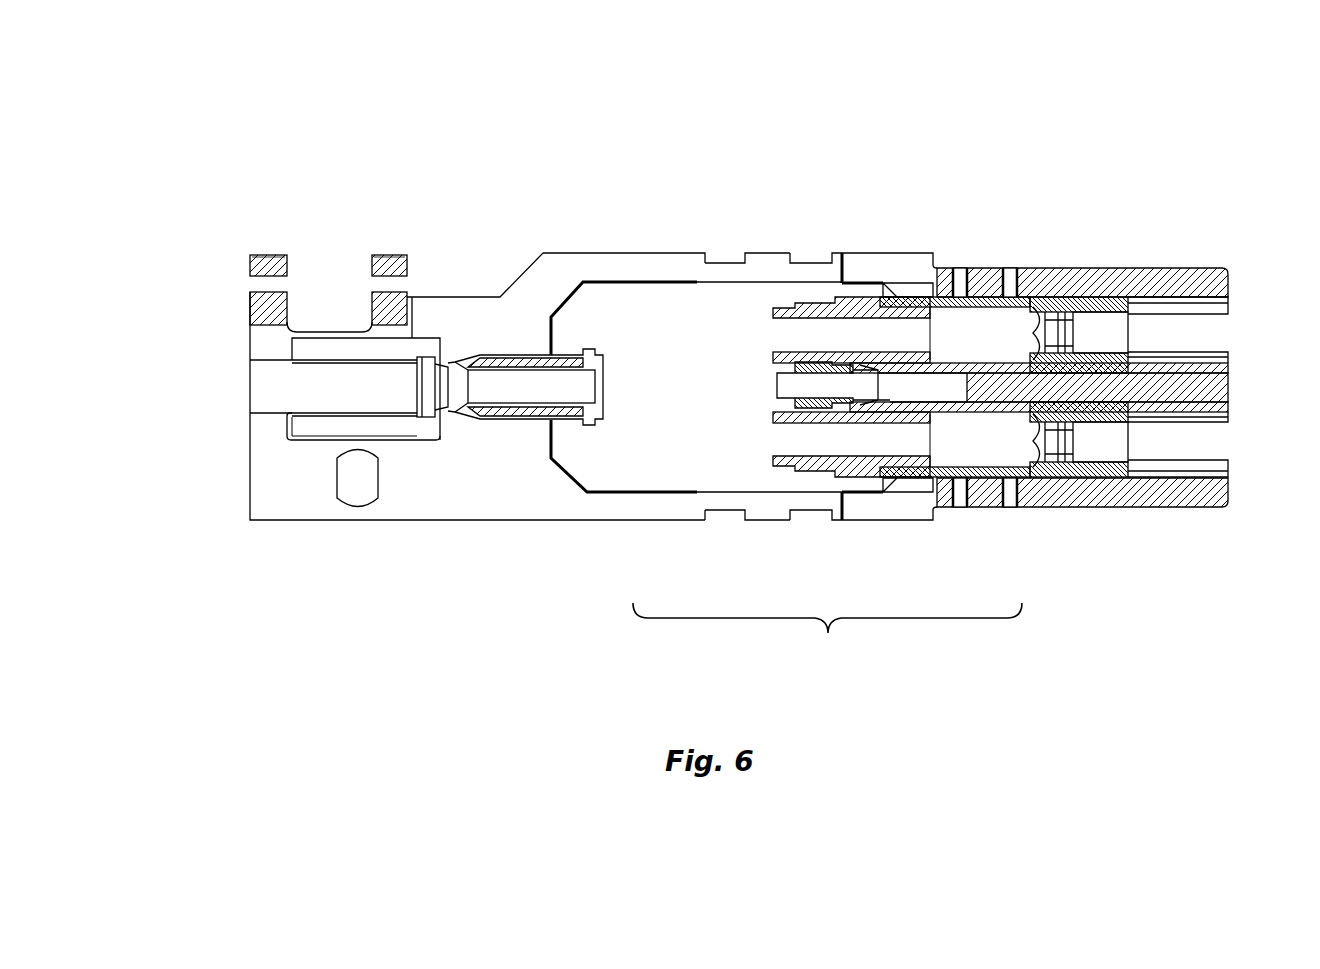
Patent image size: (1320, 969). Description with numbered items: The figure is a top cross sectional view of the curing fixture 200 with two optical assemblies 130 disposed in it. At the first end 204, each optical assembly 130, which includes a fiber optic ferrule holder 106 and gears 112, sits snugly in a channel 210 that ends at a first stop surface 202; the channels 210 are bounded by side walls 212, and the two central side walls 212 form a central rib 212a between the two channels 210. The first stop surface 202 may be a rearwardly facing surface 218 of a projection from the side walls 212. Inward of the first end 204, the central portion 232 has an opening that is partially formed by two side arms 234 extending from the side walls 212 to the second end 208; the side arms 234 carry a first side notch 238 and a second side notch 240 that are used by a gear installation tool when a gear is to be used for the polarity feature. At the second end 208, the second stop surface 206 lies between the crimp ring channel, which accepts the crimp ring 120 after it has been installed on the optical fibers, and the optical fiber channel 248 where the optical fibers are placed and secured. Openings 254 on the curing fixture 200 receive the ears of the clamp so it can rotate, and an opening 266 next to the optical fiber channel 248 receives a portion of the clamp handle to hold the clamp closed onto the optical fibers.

The curing fixture 200 is at (769, 120).
The first stop surface 202 is at (1122, 478).
The first end 204 is at (1247, 272).
The second stop surface 206 is at (428, 378).
The second end 208 is at (205, 487).
The channel 210 is at (1208, 332).
The side walls 212 is at (1228, 462).
The central rib 212a is at (1218, 388).
The surface 218 is at (1228, 407).
The fiber optic ferrule holder 106 is at (1052, 330).
The gears 112 is at (828, 300).
The crimp ring 120 is at (573, 348).
The optical assemblies 130 is at (1100, 305).
The central portion 232 is at (827, 632).
The side arms 234 is at (633, 253).
The first side notch 238 is at (727, 263).
The second side notch 240 is at (815, 263).
The optical fiber channel 248 is at (263, 393).
The openings 254 is at (256, 282).
The opening 266 is at (352, 510).